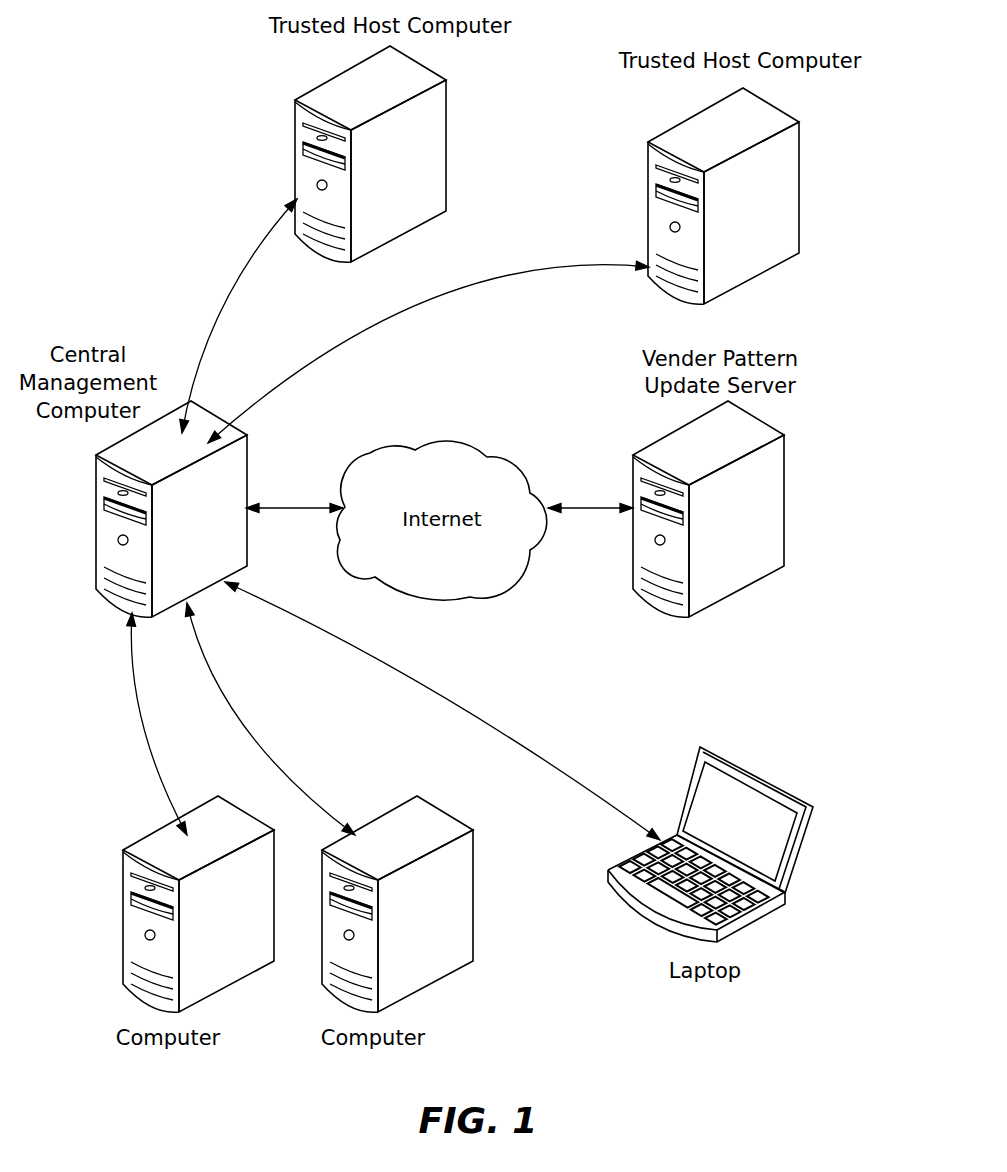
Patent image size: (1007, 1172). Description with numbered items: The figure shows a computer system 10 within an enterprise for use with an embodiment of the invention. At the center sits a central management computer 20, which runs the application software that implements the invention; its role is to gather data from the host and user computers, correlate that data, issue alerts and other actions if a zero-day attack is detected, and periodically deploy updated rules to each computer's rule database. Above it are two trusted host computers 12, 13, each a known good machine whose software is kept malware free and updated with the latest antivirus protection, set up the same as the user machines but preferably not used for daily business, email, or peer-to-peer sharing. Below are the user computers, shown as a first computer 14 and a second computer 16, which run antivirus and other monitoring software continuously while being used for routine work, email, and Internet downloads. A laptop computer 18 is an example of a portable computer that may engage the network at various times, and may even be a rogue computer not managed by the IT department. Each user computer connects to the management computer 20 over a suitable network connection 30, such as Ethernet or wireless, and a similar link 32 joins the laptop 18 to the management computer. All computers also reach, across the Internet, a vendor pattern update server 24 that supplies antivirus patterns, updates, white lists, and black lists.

The computer system 10 is at (202, 150).
The trusted host computer 12 is at (440, 157).
The trusted host computer 13 is at (780, 173).
The user computer 14 is at (130, 867).
The user computer 16 is at (458, 872).
The laptop computer 18 is at (755, 782).
The central management computer 20 is at (233, 490).
The vendor pattern update server 24 is at (767, 507).
The network connection 30 is at (267, 747).
The communication link 32 is at (520, 735).